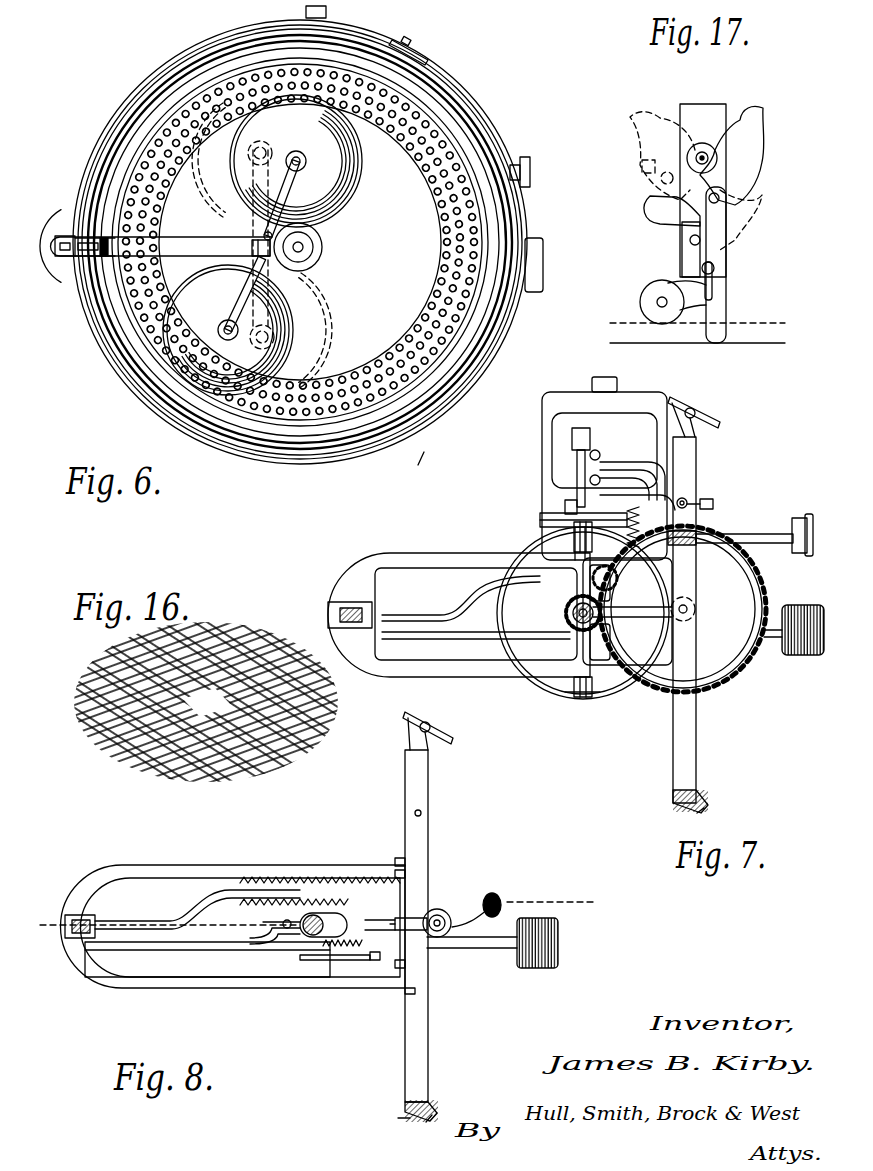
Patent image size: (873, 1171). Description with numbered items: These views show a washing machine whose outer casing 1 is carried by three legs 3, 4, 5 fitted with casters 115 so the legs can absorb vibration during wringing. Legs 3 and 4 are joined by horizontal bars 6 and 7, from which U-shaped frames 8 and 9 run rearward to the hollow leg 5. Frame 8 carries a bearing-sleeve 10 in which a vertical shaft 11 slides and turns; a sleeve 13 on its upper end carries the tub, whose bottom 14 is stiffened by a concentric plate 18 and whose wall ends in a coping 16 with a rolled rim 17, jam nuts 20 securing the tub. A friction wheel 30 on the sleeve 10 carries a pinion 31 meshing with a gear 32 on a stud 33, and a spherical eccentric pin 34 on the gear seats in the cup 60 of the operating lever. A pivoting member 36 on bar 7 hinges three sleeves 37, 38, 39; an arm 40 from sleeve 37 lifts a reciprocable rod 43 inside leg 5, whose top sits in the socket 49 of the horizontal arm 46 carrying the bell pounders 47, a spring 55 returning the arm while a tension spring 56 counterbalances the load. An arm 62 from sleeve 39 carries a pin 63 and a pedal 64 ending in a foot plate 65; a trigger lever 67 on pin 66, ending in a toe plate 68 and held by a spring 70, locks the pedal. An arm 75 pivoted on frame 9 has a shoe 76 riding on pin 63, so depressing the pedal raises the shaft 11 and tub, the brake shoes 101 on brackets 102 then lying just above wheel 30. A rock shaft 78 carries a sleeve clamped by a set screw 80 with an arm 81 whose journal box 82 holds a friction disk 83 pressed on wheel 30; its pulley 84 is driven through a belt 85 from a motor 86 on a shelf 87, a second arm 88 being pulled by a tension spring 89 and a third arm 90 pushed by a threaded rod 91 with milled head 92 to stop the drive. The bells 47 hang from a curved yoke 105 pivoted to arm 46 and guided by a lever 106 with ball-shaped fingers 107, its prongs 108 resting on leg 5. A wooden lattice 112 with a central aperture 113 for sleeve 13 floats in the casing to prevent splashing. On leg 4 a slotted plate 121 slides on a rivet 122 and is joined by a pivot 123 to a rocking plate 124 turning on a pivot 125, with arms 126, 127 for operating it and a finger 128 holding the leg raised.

In FIG. 6, the outer casing 1 is at (458, 108).
In FIG. 6, the vertical leg 3 is at (417, 465).
In FIG. 7, the vertical leg 3 is at (698, 810).
In FIG. 8, the vertical leg 3 is at (426, 1122).
In FIG. 6, the vertical leg 4 is at (422, 52).
In FIG. 17, the vertical leg 4 is at (695, 115).
In FIG. 7, the vertical leg 4 is at (700, 427).
In FIG. 8, the vertical leg 4 is at (438, 736).
In FIG. 6, the vertical leg 5 is at (58, 262).
In FIG. 7, the vertical leg 5 is at (332, 598).
In FIG. 8, the vertical leg 5 is at (74, 915).
In FIG. 7, the horizontal bar 6 is at (690, 778).
In FIG. 8, the horizontal bar 7 is at (428, 1078).
In FIG. 6, the U-shaped frame 8 is at (55, 216).
In FIG. 7, the U-shaped frame 8 is at (482, 678).
In FIG. 8, the U-shaped frame 9 is at (188, 986).
In FIG. 7, the bearing-sleeve 10 is at (575, 602).
In FIG. 7, the vertical shaft 11 is at (575, 622).
In FIG. 8, the vertical shaft 11 is at (323, 924).
In FIG. 6, the vertical sleeve 13 is at (312, 247).
In FIG. 6, the tub bottom 14 is at (445, 258).
In FIG. 6, the coping 16 is at (468, 152).
In FIG. 6, the rolled rim 17 is at (458, 168).
In FIG. 6, the separate plate 18 is at (300, 242).
In FIG. 6, the jam nuts 20 is at (322, 257).
In FIG. 7, the friction wheel 30 is at (504, 608).
In FIG. 7, the pinion 31 is at (566, 611).
In FIG. 7, the gear 32 is at (732, 672).
In FIG. 7, the stud 33 is at (692, 609).
In FIG. 8, the eccentric pin 34 is at (437, 909).
In FIG. 8, the pivoting member 36 is at (418, 992).
In FIG. 8, the sleeve 37 is at (420, 880).
In FIG. 8, the sleeve 38 is at (432, 900).
In FIG. 8, the sleeve 39 is at (422, 966).
In FIG. 7, the arm 40 is at (420, 613).
In FIG. 8, the arm 40 is at (160, 920).
In FIG. 6, the vertically reciprocable rod 43 is at (66, 262).
In FIG. 7, the vertically reciprocable rod 43 is at (349, 628).
In FIG. 8, the vertically reciprocable rod 43 is at (92, 919).
In FIG. 6, the horizontal arm 46 is at (104, 236).
In FIG. 6, the bells 47 is at (338, 188).
In FIG. 6, the socket portion 49 is at (62, 215).
In FIG. 8, the spring 55 is at (275, 912).
In FIG. 8, the tension spring 56 is at (330, 878).
In FIG. 8, the cup 60 is at (442, 934).
In FIG. 8, the arm 62 is at (318, 955).
In FIG. 8, the pin 63 is at (286, 914).
In FIG. 7, the pedal 64 is at (770, 645).
In FIG. 8, the pedal 64 is at (482, 950).
In FIG. 6, the foot plate 65 is at (544, 273).
In FIG. 7, the foot plate 65 is at (805, 657).
In FIG. 8, the foot plate 65 is at (558, 944).
In FIG. 8, the horizontal pin 66 is at (376, 958).
In FIG. 8, the trigger lever 67 is at (426, 925).
In FIG. 8, the toe plate 68 is at (493, 893).
In FIG. 8, the spring 70 is at (350, 950).
In FIG. 7, the arm 75 is at (473, 637).
In FIG. 8, the arm 75 is at (185, 958).
In FIG. 8, the shoe 76 is at (262, 932).
In FIG. 7, the rock shaft 78 is at (688, 500).
In FIG. 8, the rock shaft 78 is at (422, 812).
In FIG. 7, the set screw 80 is at (713, 504).
In FIG. 7, the arm 81 is at (640, 462).
In FIG. 7, the journal box 82 is at (576, 456).
In FIG. 7, the friction disk 83 is at (545, 518).
In FIG. 7, the pulley 84 is at (566, 510).
In FIG. 7, the belt 85 is at (553, 510).
In FIG. 7, the electric motor 86 is at (604, 440).
In FIG. 7, the shelf 87 is at (553, 402).
In FIG. 7, the second arm 88 is at (649, 526).
In FIG. 7, the tension spring 89 is at (606, 552).
In FIG. 7, the third arm 90 is at (627, 611).
In FIG. 7, the threaded rod 91 is at (752, 535).
In FIG. 6, the milled head 92 is at (530, 173).
In FIG. 7, the milled head 92 is at (800, 518).
In FIG. 7, the brake shoes 101 is at (572, 696).
In FIG. 7, the brackets 102 is at (540, 540).
In FIG. 6, the curved yoke 105 is at (266, 233).
In FIG. 6, the lever 106 is at (161, 244).
In FIG. 6, the ball-shaped fingers 107 is at (296, 270).
In FIG. 6, the prongs 108 is at (105, 258).
In FIG. 16, the lattice 112 is at (285, 748).
In FIG. 16, the central aperture 113 is at (207, 702).
In FIG. 17, the casters 115 is at (652, 292).
In FIG. 7, the casters 115 is at (693, 402).
In FIG. 8, the casters 115 is at (406, 1118).
In FIG. 17, the slotted plate 121 is at (718, 338).
In FIG. 17, the rivet 122 is at (718, 268).
In FIG. 17, the pivot 123 is at (720, 205).
In FIG. 17, the rocking plate 124 is at (760, 162).
In FIG. 17, the pivot 125 is at (704, 156).
In FIG. 17, the arm 126 is at (758, 120).
In FIG. 17, the arm 127 is at (647, 212).
In FIG. 17, the finger 128 is at (682, 226).